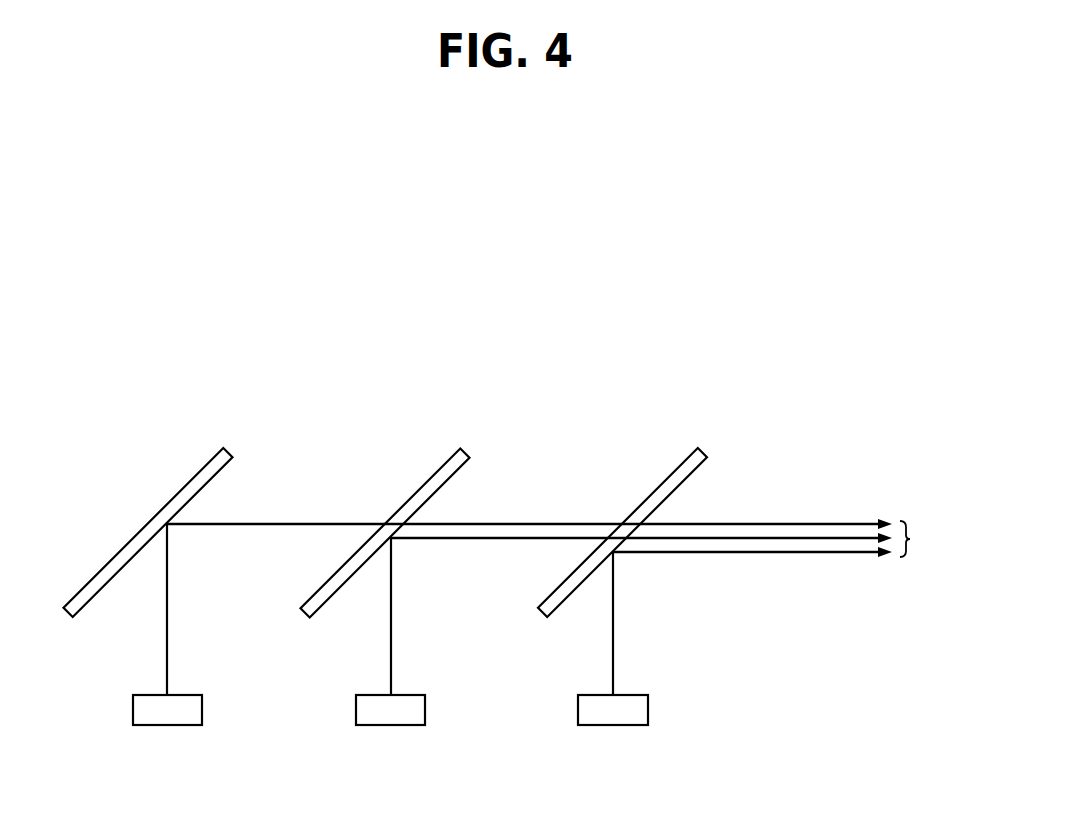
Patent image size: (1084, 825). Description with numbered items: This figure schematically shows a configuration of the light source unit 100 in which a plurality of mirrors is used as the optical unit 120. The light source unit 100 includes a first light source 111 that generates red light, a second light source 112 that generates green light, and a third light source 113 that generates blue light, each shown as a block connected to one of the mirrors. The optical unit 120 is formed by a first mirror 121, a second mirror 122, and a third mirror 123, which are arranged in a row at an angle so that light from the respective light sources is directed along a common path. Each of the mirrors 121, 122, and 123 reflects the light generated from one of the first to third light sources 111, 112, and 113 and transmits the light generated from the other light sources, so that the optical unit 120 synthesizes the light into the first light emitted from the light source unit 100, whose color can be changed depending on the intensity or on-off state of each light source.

The light source unit 100 is at (865, 267).
The first light source 111 is at (166, 727).
The second light source 112 is at (389, 727).
The third light source 113 is at (612, 727).
The optical unit 120 is at (718, 375).
The mirror 121 is at (230, 447).
The mirror 122 is at (463, 449).
The mirror 123 is at (700, 448).